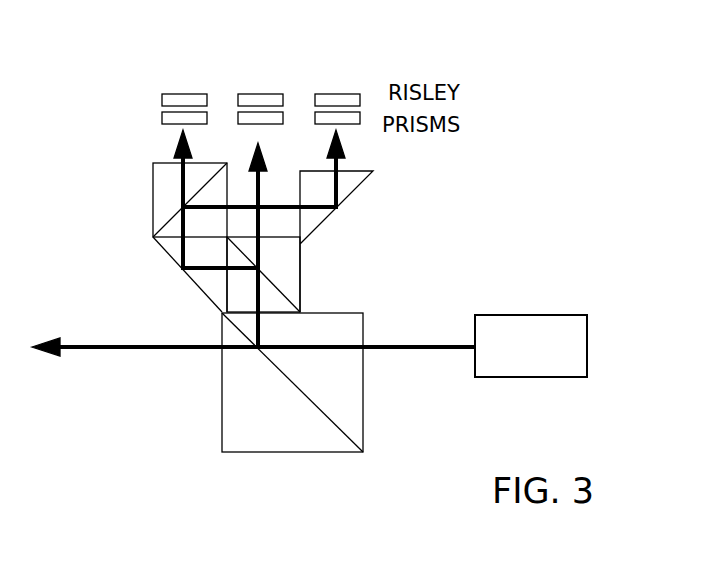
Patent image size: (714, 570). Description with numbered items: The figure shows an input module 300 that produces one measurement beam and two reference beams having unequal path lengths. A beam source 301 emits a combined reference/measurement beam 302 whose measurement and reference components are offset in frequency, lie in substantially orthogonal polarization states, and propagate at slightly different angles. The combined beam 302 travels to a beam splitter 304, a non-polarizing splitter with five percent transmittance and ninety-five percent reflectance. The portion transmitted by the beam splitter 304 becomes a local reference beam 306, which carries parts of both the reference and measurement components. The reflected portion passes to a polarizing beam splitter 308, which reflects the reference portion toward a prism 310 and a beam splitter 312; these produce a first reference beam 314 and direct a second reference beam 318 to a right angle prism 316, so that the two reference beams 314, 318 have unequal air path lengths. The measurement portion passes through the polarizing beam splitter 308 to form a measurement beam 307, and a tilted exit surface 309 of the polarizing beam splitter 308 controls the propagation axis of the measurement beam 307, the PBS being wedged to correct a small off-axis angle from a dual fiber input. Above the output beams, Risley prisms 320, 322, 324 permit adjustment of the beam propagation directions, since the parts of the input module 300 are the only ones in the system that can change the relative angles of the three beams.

The input module 300 is at (125, 480).
The beam source 301 is at (530, 313).
The combined reference/measurement beam 302 is at (382, 343).
The beam splitter 304 is at (365, 313).
The local reference beam 306 is at (97, 350).
The measurement beam 307 is at (263, 190).
The polarizing beam splitter 308 is at (293, 272).
The exit surface 309 is at (265, 242).
The prism 310 is at (163, 250).
The beam splitter 312 is at (153, 192).
The first reference beam 314 is at (177, 152).
The right angle prism 316 is at (353, 188).
The second reference beam 318 is at (343, 155).
The Risley prism 320 is at (368, 67).
The Risley prism 322 is at (283, 64).
The Risley prism 324 is at (150, 98).